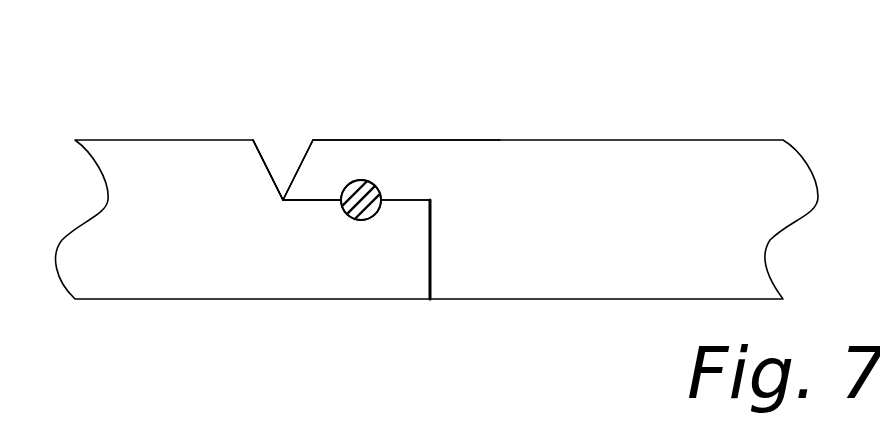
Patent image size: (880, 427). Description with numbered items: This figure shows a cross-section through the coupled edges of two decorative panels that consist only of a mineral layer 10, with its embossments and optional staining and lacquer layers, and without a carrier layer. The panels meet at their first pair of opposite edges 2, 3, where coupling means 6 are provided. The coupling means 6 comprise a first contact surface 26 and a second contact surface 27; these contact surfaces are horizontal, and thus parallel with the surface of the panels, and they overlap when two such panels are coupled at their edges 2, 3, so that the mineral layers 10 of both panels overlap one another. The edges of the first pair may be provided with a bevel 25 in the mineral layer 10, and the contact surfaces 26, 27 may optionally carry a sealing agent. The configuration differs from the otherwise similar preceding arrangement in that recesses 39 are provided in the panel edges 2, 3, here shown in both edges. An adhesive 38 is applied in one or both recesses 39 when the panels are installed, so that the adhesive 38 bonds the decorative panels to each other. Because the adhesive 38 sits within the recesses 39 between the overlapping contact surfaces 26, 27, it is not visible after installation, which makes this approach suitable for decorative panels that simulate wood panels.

The panel edge 2 is at (490, 83).
The panel edge 3 is at (213, 88).
The coupling means 6 is at (254, 85).
The mineral layer 10 is at (180, 172).
The bevel 25 is at (262, 160).
The first contact surface 26 is at (410, 200).
The second contact surface 27 is at (323, 200).
The adhesive 38 is at (350, 188).
The recess 39 is at (379, 184).